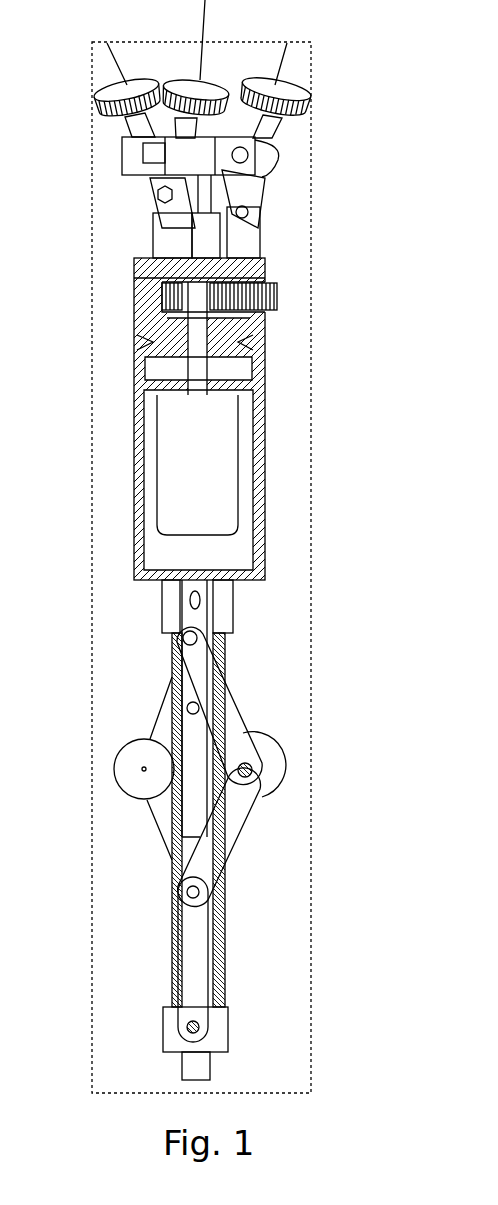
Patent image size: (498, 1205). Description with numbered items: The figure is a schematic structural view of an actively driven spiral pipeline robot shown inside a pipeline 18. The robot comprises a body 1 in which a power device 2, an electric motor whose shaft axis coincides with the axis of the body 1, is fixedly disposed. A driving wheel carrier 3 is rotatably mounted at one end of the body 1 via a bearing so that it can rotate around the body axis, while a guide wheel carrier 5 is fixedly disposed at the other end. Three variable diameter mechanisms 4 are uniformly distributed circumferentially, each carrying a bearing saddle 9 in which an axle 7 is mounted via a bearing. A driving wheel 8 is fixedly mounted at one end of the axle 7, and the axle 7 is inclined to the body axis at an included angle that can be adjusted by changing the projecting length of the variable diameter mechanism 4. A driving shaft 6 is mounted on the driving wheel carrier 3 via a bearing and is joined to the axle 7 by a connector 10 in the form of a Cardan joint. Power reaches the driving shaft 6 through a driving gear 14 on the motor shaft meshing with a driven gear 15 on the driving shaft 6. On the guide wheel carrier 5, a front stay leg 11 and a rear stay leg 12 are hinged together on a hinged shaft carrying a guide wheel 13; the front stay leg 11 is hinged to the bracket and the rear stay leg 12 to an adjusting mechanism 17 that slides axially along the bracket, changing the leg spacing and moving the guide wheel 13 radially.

The body 1 is at (205, 383).
The power device 2 is at (217, 438).
The driving wheel carrier 3 is at (258, 230).
The variable diameter mechanism 4 is at (187, 153).
The guide wheel carrier 5 is at (197, 745).
The driving shaft 6 is at (263, 280).
The axle 7 is at (283, 157).
The driving wheel 8 is at (290, 100).
The bearing saddle 9 is at (163, 180).
The connector 10 is at (165, 215).
The front stay leg 11 is at (210, 680).
The rear stay leg 12 is at (217, 827).
The guide wheel 13 is at (277, 787).
The driving gear 14 is at (153, 333).
The driven gear 15 is at (277, 293).
The adjusting mechanism 17 is at (213, 1010).
The pipeline 18 is at (92, 538).